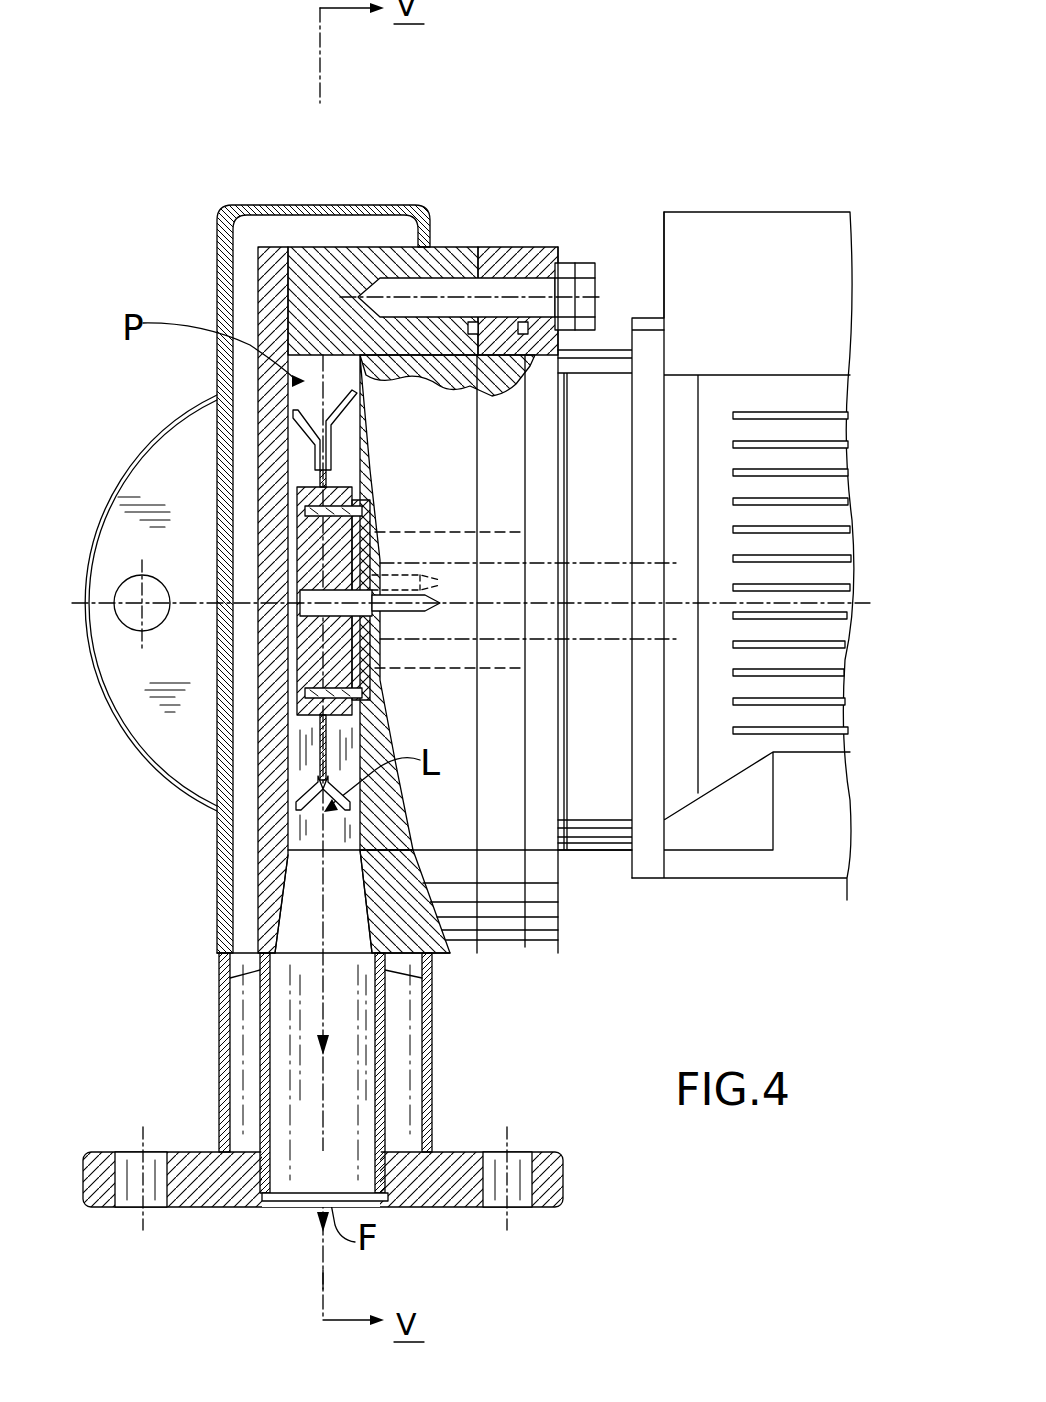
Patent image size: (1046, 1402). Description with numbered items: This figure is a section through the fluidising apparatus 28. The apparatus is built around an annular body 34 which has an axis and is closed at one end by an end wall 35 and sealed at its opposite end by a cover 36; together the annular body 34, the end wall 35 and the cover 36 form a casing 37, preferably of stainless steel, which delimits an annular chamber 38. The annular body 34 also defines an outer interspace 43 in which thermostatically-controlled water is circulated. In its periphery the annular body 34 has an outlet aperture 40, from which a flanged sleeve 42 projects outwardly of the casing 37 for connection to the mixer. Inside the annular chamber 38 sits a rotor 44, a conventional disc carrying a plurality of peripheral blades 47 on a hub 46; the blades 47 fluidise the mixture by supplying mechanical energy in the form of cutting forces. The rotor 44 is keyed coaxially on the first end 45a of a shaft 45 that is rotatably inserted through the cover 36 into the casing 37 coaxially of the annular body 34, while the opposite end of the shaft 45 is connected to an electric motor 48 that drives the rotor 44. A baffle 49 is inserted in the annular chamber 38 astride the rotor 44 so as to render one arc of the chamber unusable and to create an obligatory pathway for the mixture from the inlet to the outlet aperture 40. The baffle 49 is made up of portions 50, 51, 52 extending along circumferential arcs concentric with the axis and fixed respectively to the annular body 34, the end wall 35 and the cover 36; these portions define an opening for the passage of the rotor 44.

The fluidising apparatus 28 is at (100, 972).
The annular body 34 is at (345, 268).
The end wall 35 is at (286, 246).
The cover 36 is at (512, 250).
The casing 37 is at (452, 235).
The annular chamber 38 is at (300, 467).
The outlet aperture 40 is at (304, 903).
The flanged sleeve 42 is at (435, 1080).
The outer interspace 43 is at (246, 283).
The rotor 44 is at (331, 494).
The shaft 45 is at (600, 565).
The first end of the shaft 45a is at (365, 578).
The hub 46 is at (328, 548).
The peripheral blades 47 is at (300, 430).
The electric motor 48 is at (754, 402).
The baffle 49 is at (290, 741).
The baffle portion 50 is at (304, 833).
The baffle portion 51 is at (300, 757).
The baffle portion 52 is at (348, 745).